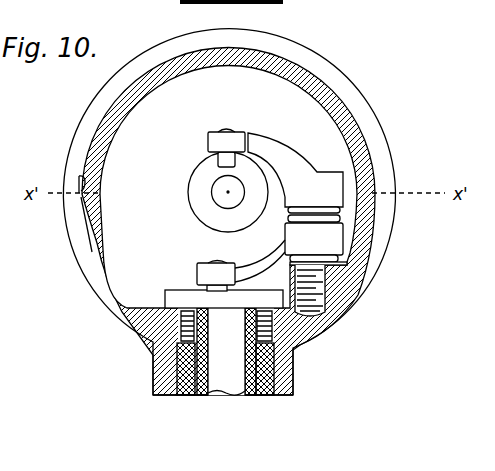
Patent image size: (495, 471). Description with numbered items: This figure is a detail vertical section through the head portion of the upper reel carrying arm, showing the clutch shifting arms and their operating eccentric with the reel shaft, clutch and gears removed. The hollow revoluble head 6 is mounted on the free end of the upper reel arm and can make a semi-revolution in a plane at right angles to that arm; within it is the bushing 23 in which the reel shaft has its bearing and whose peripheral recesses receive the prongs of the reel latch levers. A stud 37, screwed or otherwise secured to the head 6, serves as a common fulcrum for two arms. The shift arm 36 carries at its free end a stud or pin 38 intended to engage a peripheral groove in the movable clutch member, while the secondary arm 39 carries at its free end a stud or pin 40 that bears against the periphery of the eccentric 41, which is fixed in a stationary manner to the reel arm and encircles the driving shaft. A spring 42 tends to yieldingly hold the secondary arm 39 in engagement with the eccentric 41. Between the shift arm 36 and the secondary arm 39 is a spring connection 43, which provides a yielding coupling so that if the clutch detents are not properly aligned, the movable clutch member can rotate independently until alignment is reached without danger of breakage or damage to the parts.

The hollow revoluble head 6 is at (332, 79).
The bushing 23 is at (200, 198).
The shift arm 36 is at (281, 154).
The stud 37 is at (327, 297).
The stud or pin 38 is at (218, 159).
The secondary arm 39 is at (255, 263).
The stud or pin 40 is at (217, 263).
The eccentric 41 is at (180, 296).
The spring 42 is at (342, 260).
The spring connection 43 is at (340, 213).